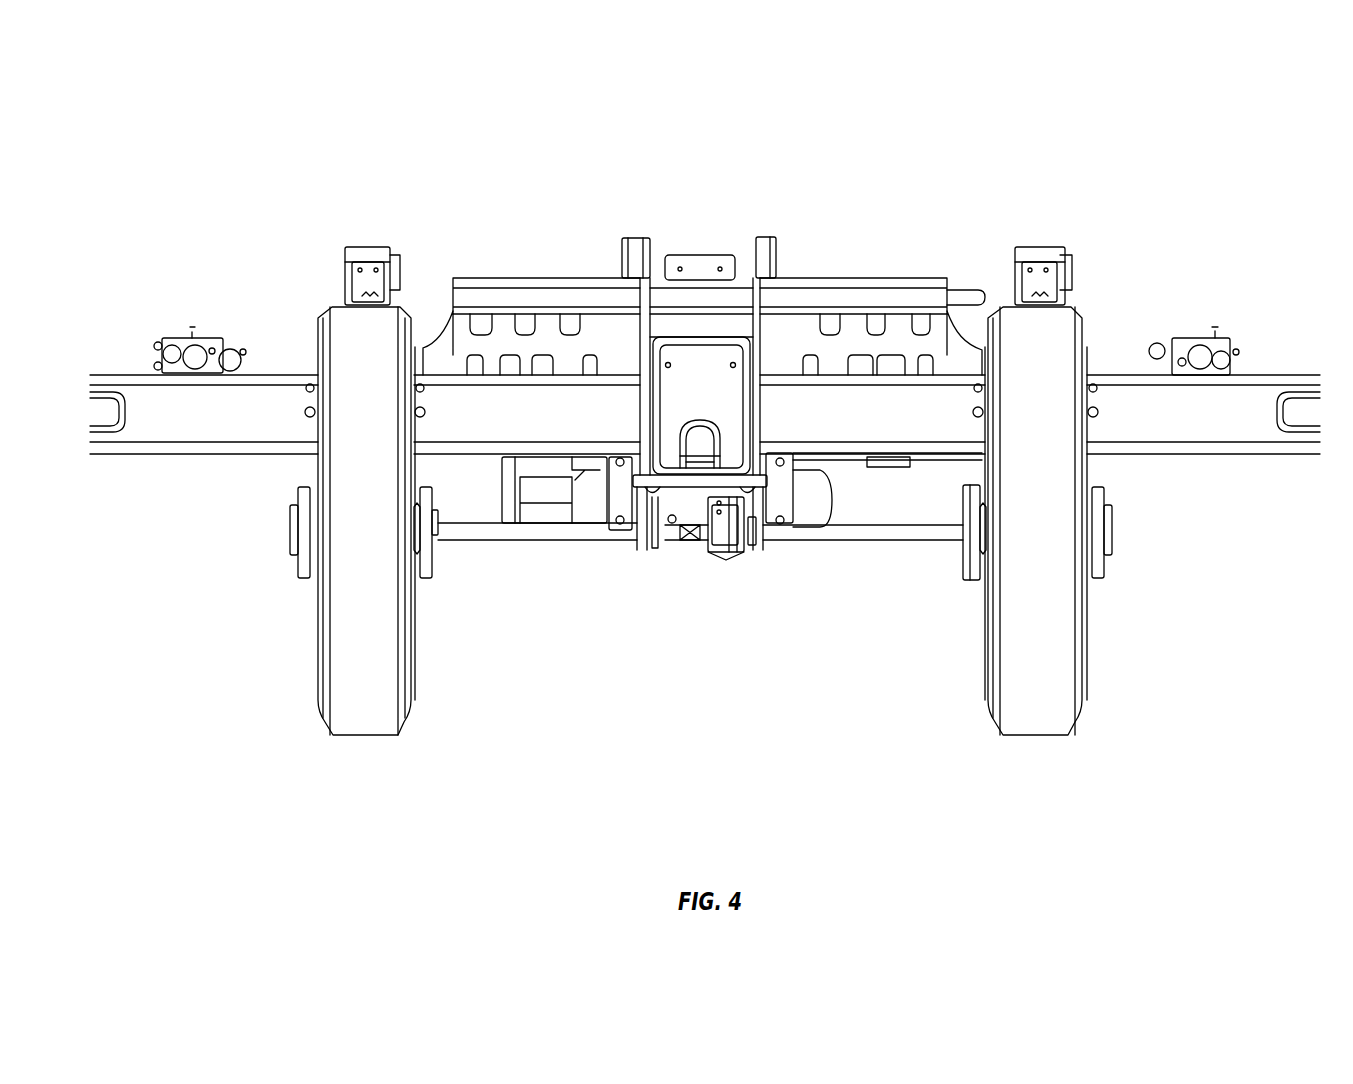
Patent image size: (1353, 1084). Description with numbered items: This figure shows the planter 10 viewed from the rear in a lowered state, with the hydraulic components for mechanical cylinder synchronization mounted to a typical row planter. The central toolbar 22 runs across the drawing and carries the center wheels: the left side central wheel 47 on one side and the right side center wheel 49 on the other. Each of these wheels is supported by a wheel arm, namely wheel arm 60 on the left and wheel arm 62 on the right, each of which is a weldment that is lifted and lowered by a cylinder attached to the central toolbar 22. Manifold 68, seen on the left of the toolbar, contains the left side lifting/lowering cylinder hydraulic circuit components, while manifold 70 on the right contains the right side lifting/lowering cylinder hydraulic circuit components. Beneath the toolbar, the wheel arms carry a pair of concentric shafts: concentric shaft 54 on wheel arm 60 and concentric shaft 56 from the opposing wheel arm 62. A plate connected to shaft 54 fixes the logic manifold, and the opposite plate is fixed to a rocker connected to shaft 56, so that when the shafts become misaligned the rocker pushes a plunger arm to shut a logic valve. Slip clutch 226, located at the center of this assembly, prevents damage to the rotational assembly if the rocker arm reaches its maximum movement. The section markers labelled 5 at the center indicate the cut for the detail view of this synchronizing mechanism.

The planter 10 is at (740, 148).
The central toolbar 22 is at (567, 407).
The manifold 68 is at (211, 338).
The manifold 70 is at (1199, 338).
The left side central wheel 47 is at (367, 713).
The center wheel 49 is at (1030, 717).
The wheel arm 60 is at (425, 553).
The wheel arm 62 is at (977, 557).
The concentric shaft 54 is at (563, 533).
The concentric shaft 56 is at (940, 533).
The slip clutch 226 is at (668, 535).
The section line 5- 5 is at (705, 481).